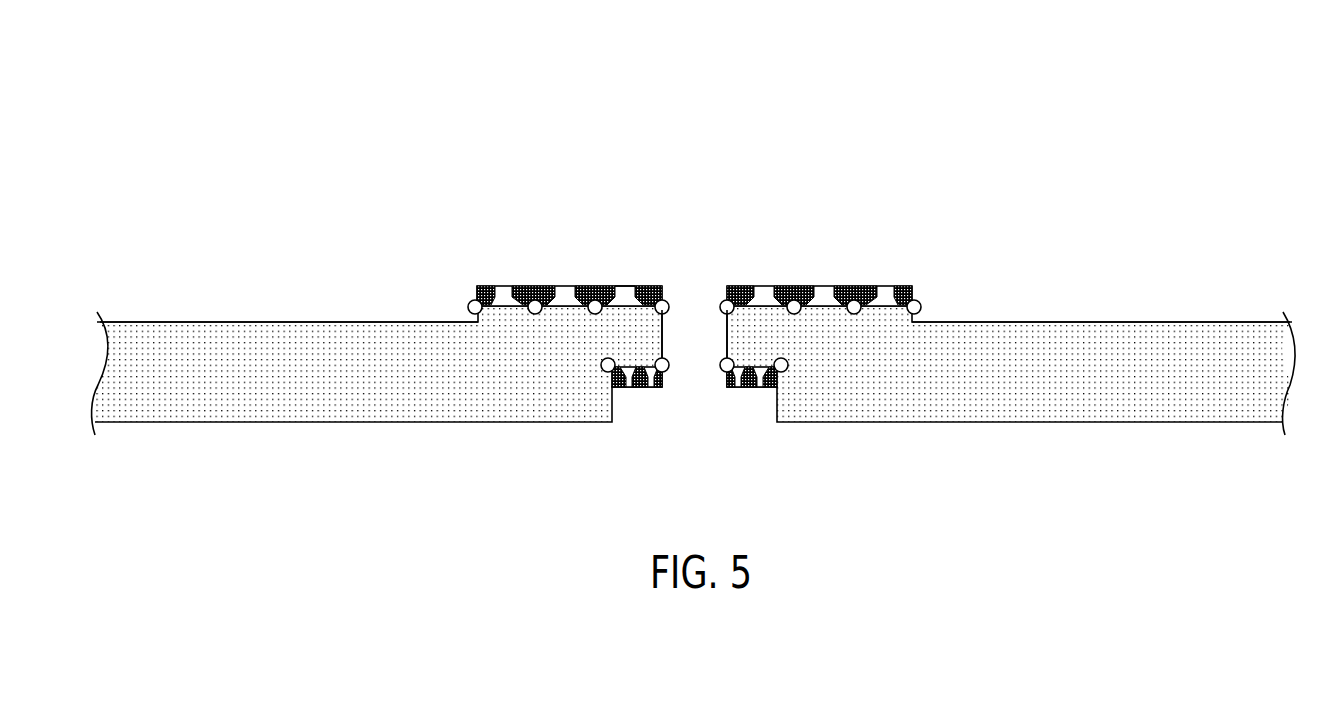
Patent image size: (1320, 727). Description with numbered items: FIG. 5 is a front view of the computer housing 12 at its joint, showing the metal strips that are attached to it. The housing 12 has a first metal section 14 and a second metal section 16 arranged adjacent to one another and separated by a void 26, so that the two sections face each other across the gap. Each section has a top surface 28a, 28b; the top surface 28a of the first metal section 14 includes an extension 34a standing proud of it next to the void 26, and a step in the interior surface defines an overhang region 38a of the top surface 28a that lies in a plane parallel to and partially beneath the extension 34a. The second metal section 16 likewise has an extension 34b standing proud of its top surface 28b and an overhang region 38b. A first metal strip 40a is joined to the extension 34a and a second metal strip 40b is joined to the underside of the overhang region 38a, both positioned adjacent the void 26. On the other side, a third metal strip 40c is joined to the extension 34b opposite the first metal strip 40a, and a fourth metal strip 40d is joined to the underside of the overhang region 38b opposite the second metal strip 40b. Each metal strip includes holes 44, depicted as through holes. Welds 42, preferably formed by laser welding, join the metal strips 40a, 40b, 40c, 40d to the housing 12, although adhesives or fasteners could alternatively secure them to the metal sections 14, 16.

The housing 12 is at (1194, 153).
The first metal section 14 is at (167, 397).
The second metal section 16 is at (1242, 397).
The void 26 is at (697, 318).
The top surface 28a is at (312, 322).
The top surface 28b is at (1075, 322).
The extension 34a is at (539, 238).
The extension 34b is at (837, 256).
The overhang region 38a is at (615, 422).
The overhang region 38b is at (771, 422).
The first metal strip 40a is at (597, 286).
The second metal strip 40b is at (633, 387).
The third metal strip 40c is at (795, 300).
The fourth metal strip 40d is at (755, 387).
The welds 42 is at (468, 306).
The holes 44 is at (626, 278).